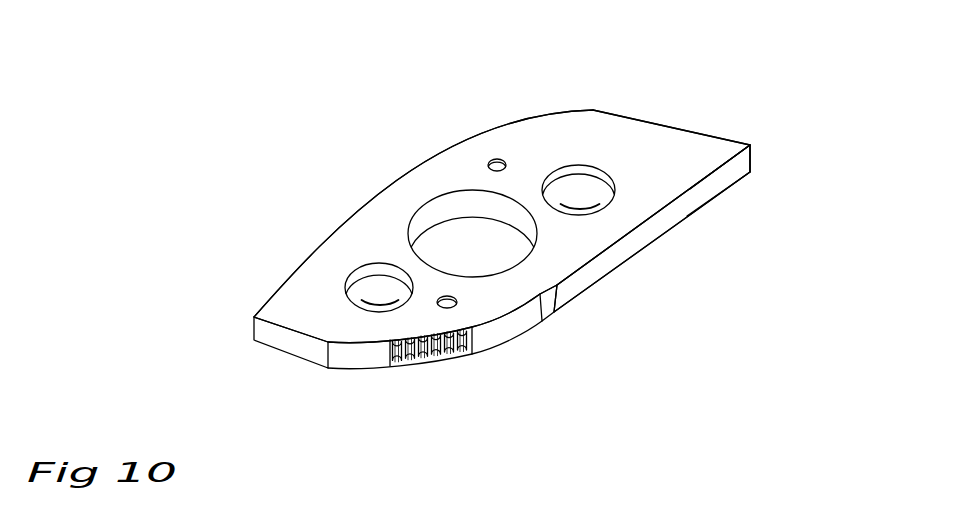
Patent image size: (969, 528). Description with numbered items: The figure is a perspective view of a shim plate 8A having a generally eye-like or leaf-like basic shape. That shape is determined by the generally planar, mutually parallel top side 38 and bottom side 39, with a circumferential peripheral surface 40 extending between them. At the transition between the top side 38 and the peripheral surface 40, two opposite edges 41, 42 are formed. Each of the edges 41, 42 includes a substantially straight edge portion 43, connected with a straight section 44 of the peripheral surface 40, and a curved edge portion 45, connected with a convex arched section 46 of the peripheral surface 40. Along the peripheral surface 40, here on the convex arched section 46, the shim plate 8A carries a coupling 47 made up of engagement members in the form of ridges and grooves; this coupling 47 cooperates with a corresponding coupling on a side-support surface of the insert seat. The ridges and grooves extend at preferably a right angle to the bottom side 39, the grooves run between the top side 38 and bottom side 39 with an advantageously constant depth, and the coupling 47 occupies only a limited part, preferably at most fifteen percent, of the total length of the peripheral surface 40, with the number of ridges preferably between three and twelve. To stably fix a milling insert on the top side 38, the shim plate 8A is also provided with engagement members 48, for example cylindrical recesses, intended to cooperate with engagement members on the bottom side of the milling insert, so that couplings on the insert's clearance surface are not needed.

The shim plate 8A is at (638, 102).
The top side 38 is at (673, 172).
The bottom side 39 is at (317, 367).
The peripheral surface 40 is at (755, 158).
The edge 41 is at (658, 219).
The edge 42 is at (378, 192).
The straight edge portion 43 is at (710, 177).
The straight section 44 is at (608, 262).
The curved edge portion 45 is at (538, 298).
The convex arched section 46 is at (502, 332).
The coupling 47 is at (420, 360).
The engagement members 48 is at (496, 161).